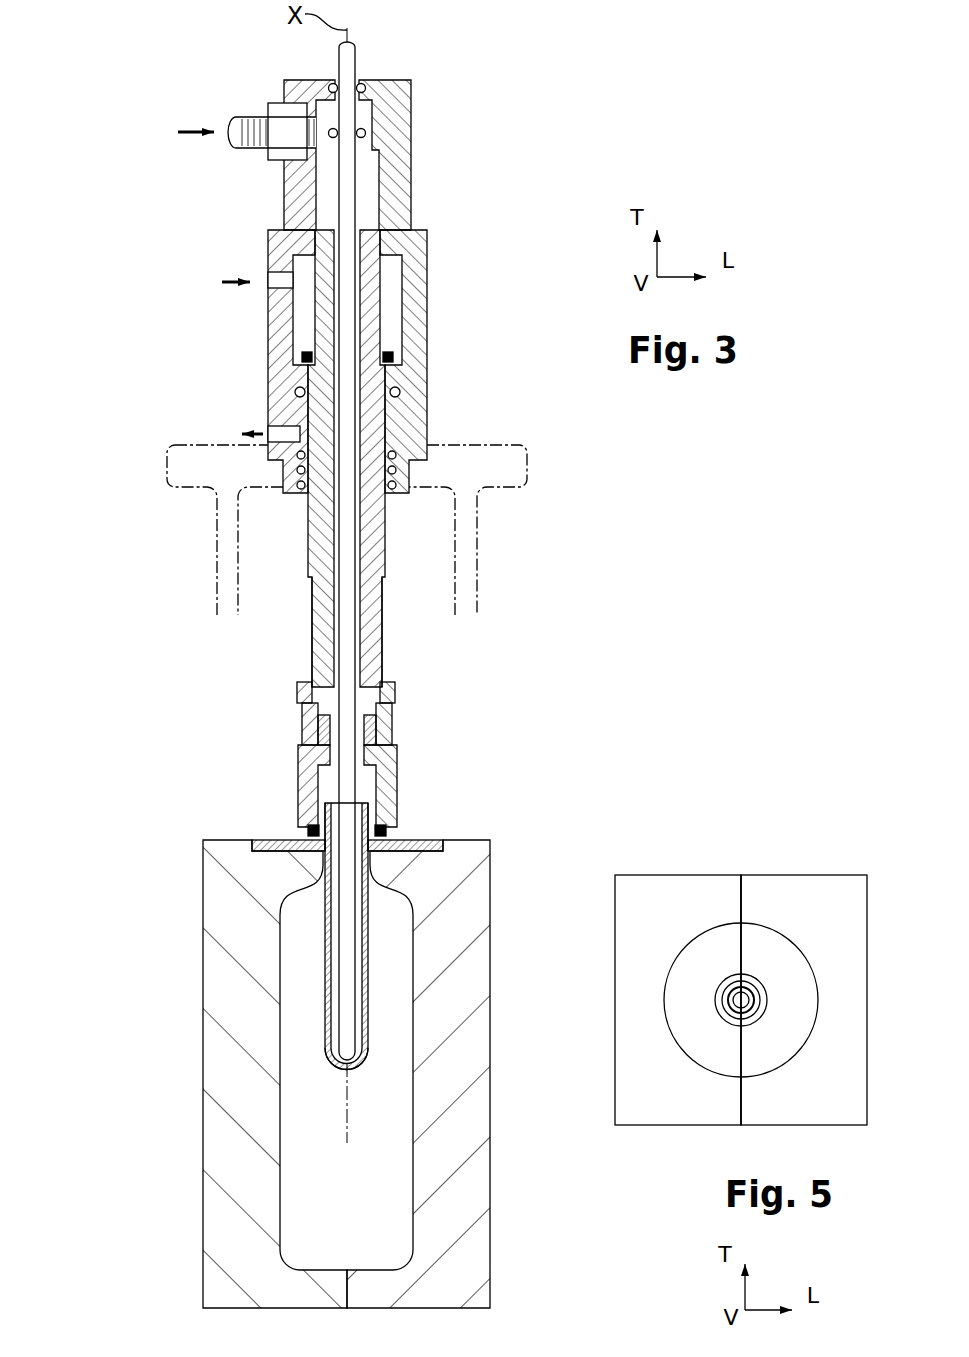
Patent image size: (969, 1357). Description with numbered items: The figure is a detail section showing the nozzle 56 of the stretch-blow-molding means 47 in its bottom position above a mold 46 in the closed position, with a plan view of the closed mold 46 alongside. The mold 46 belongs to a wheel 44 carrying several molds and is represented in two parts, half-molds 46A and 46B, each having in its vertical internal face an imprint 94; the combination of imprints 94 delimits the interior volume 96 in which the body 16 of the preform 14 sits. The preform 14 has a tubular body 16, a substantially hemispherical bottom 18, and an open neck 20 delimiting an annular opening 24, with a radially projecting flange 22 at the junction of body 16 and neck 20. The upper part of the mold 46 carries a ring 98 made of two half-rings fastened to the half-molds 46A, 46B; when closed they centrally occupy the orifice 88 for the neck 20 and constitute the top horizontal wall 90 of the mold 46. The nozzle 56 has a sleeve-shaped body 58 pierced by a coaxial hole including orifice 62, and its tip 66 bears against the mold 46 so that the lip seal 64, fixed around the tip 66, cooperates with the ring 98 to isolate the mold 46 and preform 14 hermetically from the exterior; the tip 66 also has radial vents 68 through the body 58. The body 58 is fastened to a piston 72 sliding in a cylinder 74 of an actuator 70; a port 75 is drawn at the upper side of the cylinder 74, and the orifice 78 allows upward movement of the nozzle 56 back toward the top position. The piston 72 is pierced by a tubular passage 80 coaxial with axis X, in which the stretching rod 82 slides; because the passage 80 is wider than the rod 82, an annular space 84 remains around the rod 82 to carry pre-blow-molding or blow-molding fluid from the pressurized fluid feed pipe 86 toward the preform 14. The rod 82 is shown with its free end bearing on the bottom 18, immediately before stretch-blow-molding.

In FIG. 3, the preform 14 is at (242, 953).
In FIG. 5, the preform 14 is at (715, 1017).
In FIG. 3, the body 16 is at (325, 992).
In FIG. 3, the bottom 18 is at (328, 1060).
In FIG. 3, the neck 20 is at (333, 848).
In FIG. 5, the flange 22 is at (728, 1024).
In FIG. 3, the annular opening 24 is at (354, 551).
In FIG. 5, the annular opening 24 is at (718, 1001).
In FIG. 3, the wheel 44 is at (195, 460).
In FIG. 3, the mold 46 is at (336, 1047).
In FIG. 5, the mold 46 is at (761, 988).
In FIG. 3, the half-mold 46A is at (468, 1243).
In FIG. 5, the half-mold 46A is at (835, 888).
In FIG. 3, the half-mold 46B is at (232, 1233).
In FIG. 5, the half-mold 46B is at (658, 888).
In FIG. 3, the blow-molding or stretch-blow-molding means 47 is at (319, 675).
In FIG. 3, the nozzle 56 is at (362, 678).
In FIG. 3, the body 58 is at (390, 787).
In FIG. 3, the orifice 62 is at (362, 700).
In FIG. 3, the lip seal 64 is at (383, 830).
In FIG. 3, the tip 66 is at (255, 798).
In FIG. 3, the vents 68 is at (305, 833).
In FIG. 3, the actuator 70 is at (366, 371).
In FIG. 3, the piston 72 is at (372, 388).
In FIG. 3, the cylinder 74 is at (392, 324).
In FIG. 3, the inlet port 75 is at (272, 282).
In FIG. 3, the second orifice 78 is at (283, 432).
In FIG. 3, the tubular passage 80 is at (358, 457).
In FIG. 3, the rod 82 is at (348, 556).
In FIG. 3, the annular space 84 is at (360, 532).
In FIG. 3, the pressurized fluid feed pipe 86 is at (248, 118).
In FIG. 5, the orifice 88 is at (772, 1003).
In FIG. 3, the top horizontal wall 90 is at (252, 836).
In FIG. 5, the top horizontal wall 90 is at (767, 903).
In FIG. 3, the imprint 94 is at (405, 1080).
In FIG. 3, the interior volume 96 is at (378, 1186).
In FIG. 3, the ring 98 is at (442, 835).
In FIG. 5, the ring 98 is at (685, 978).